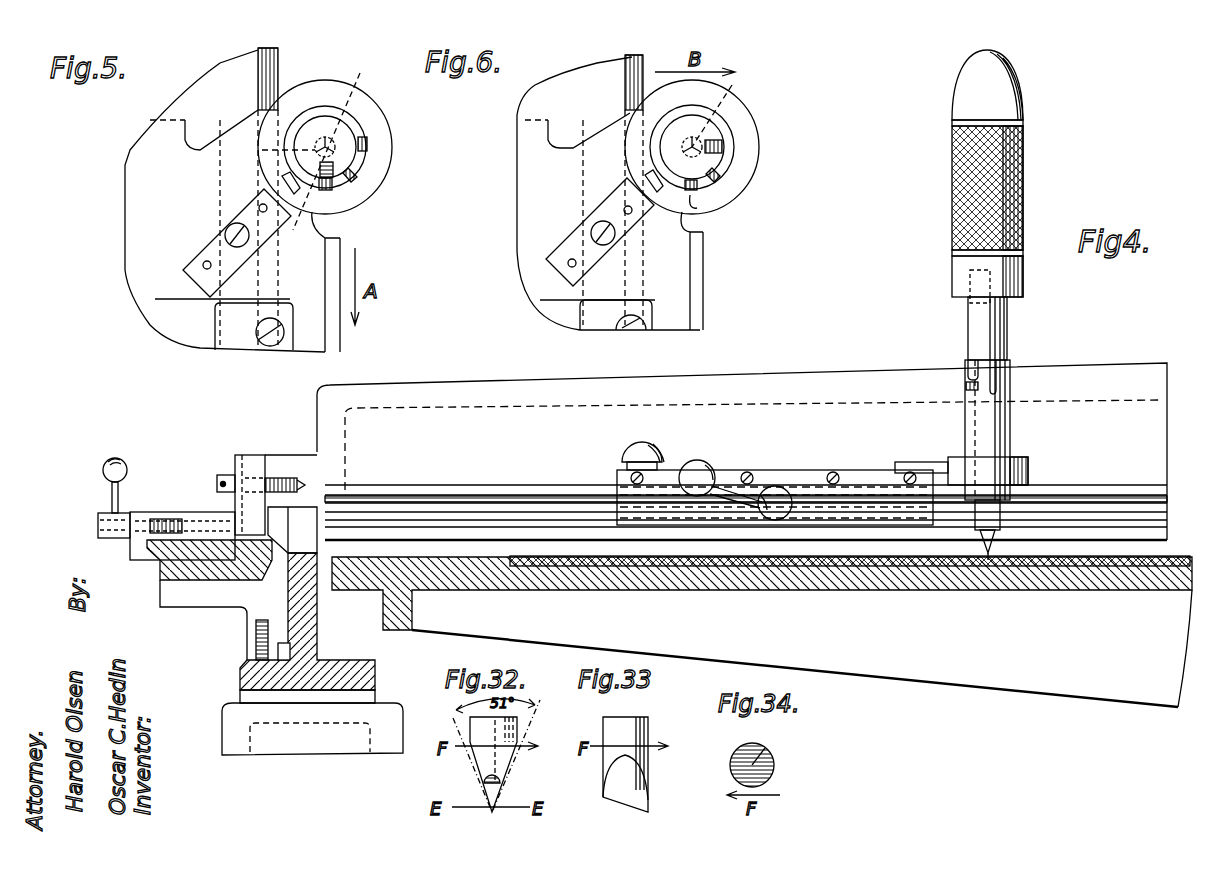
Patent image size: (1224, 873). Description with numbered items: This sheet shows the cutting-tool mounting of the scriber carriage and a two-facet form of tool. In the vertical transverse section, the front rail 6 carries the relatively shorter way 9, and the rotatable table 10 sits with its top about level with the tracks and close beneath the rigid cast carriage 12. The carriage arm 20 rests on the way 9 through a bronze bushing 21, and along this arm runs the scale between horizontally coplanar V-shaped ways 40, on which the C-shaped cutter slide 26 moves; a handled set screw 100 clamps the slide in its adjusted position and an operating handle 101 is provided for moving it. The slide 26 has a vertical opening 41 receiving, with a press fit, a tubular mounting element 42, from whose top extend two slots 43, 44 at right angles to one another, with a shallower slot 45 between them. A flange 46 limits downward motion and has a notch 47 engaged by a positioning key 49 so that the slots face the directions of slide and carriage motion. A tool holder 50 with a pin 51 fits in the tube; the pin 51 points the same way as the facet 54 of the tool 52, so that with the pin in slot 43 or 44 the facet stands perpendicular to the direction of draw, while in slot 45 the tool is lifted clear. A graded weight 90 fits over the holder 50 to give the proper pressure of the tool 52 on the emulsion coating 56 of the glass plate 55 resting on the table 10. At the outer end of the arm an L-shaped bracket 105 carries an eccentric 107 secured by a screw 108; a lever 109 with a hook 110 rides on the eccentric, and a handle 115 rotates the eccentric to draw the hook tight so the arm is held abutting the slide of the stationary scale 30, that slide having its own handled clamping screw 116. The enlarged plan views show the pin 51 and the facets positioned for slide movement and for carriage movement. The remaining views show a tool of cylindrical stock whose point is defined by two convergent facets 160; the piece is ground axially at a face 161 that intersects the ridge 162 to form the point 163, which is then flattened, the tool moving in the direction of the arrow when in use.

In FIG. 4, the front rail 6 is at (386, 722).
In FIG. 4, the way 9 is at (292, 612).
In FIG. 4, the rotatable table 10 is at (680, 590).
In FIG. 4, the carriage 12 is at (476, 386).
In FIG. 4, the arm 20 is at (798, 372).
In FIG. 4, the bronze bushing 21 is at (300, 512).
In FIG. 5, the cutter slide 26 is at (316, 335).
In FIG. 6, the cutter slide 26 is at (685, 277).
In FIG. 4, the cutter slide 26 is at (808, 454).
In FIG. 4, the stationary scale 30 is at (167, 562).
In FIG. 4, the V-shaped ways 40 is at (515, 482).
In FIG. 4, the vertical opening 41 is at (955, 470).
In FIG. 5, the tubular element 42 is at (355, 120).
In FIG. 6, the tubular element 42 is at (722, 118).
In FIG. 4, the tubular element 42 is at (1012, 423).
In FIG. 5, the slot 43 is at (340, 188).
In FIG. 6, the slot 43 is at (700, 207).
In FIG. 5, the slot 44 is at (370, 143).
In FIG. 4, the slot 44 is at (1000, 370).
In FIG. 5, the shallower slot 45 is at (358, 178).
In FIG. 6, the shallower slot 45 is at (724, 180).
In FIG. 4, the shallower slot 45 is at (968, 362).
In FIG. 5, the flange 46 is at (386, 157).
In FIG. 6, the flange 46 is at (752, 160).
In FIG. 4, the flange 46 is at (1030, 460).
In FIG. 5, the notch 47 is at (283, 176).
In FIG. 6, the notch 47 is at (645, 176).
In FIG. 5, the positioning key 49 is at (200, 250).
In FIG. 6, the positioning key 49 is at (575, 248).
In FIG. 5, the tool holder 50 is at (310, 125).
In FIG. 4, the tool holder 50 is at (1008, 320).
In FIG. 5, the pin 51 is at (318, 180).
In FIG. 6, the pin 51 is at (724, 148).
In FIG. 4, the pin 51 is at (966, 386).
In FIG. 5, the tool 52 is at (338, 145).
In FIG. 6, the tool 52 is at (709, 127).
In FIG. 4, the tool 52 is at (992, 555).
In FIG. 5, the facet 54 is at (281, 148).
In FIG. 6, the facet 54 is at (725, 132).
In FIG. 4, the facet 54 is at (985, 560).
In FIG. 4, the glass plate 55 is at (1105, 568).
In FIG. 4, the emulsion coating 56 is at (1170, 557).
In FIG. 4, the weight 90 is at (1022, 185).
In FIG. 4, the set screw 100 is at (703, 470).
In FIG. 4, the operating handle 101 is at (655, 448).
In FIG. 4, the L-shaped bracket 105 is at (262, 455).
In FIG. 4, the eccentric 107 is at (240, 470).
In FIG. 4, the screw 108 is at (275, 478).
In FIG. 4, the lever 109 is at (248, 462).
In FIG. 4, the hook 110 is at (240, 512).
In FIG. 4, the handle 115 is at (217, 484).
In FIG. 4, the clamping screw 116 is at (98, 522).
In FIG. 32, the facets 160 is at (472, 768).
In FIG. 33, the facets 160 is at (620, 790).
In FIG. 34, the facets 160 is at (735, 747).
In FIG. 32, the ground face 161 is at (501, 786).
In FIG. 33, the ground face 161 is at (648, 792).
In FIG. 34, the ground face 161 is at (772, 760).
In FIG. 33, the ridge 162 is at (615, 806).
In FIG. 34, the ridge 162 is at (760, 752).
In FIG. 32, the point 163 is at (492, 812).
In FIG. 33, the point 163 is at (650, 812).
In FIG. 34, the point 163 is at (773, 768).